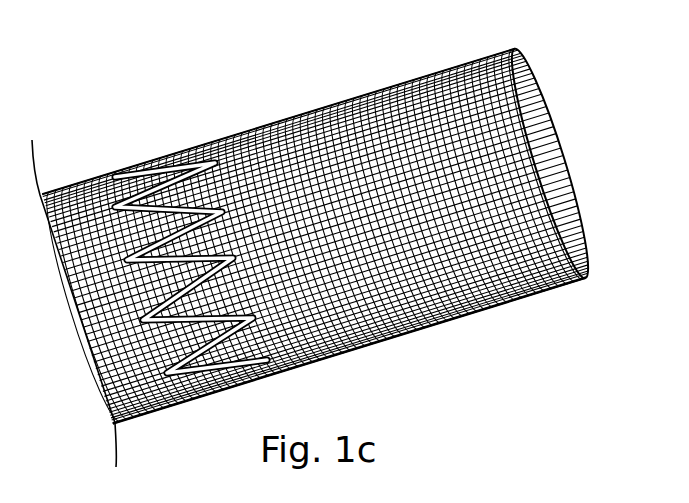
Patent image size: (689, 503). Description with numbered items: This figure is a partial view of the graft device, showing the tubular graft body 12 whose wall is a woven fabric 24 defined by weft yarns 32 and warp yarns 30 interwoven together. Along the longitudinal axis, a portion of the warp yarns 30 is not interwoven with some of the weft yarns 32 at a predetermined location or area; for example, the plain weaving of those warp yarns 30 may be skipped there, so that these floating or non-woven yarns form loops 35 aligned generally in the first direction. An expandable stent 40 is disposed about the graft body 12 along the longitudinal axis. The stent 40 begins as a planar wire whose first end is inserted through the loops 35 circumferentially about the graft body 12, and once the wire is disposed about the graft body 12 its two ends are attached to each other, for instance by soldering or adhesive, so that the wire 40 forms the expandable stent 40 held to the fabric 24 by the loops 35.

The graft body 12 is at (372, 90).
The woven fabric 24 is at (482, 312).
The warp yarns 30 is at (455, 67).
The weft yarns 32 is at (517, 52).
The loops 35 is at (238, 128).
The expandable stent 40 is at (130, 168).